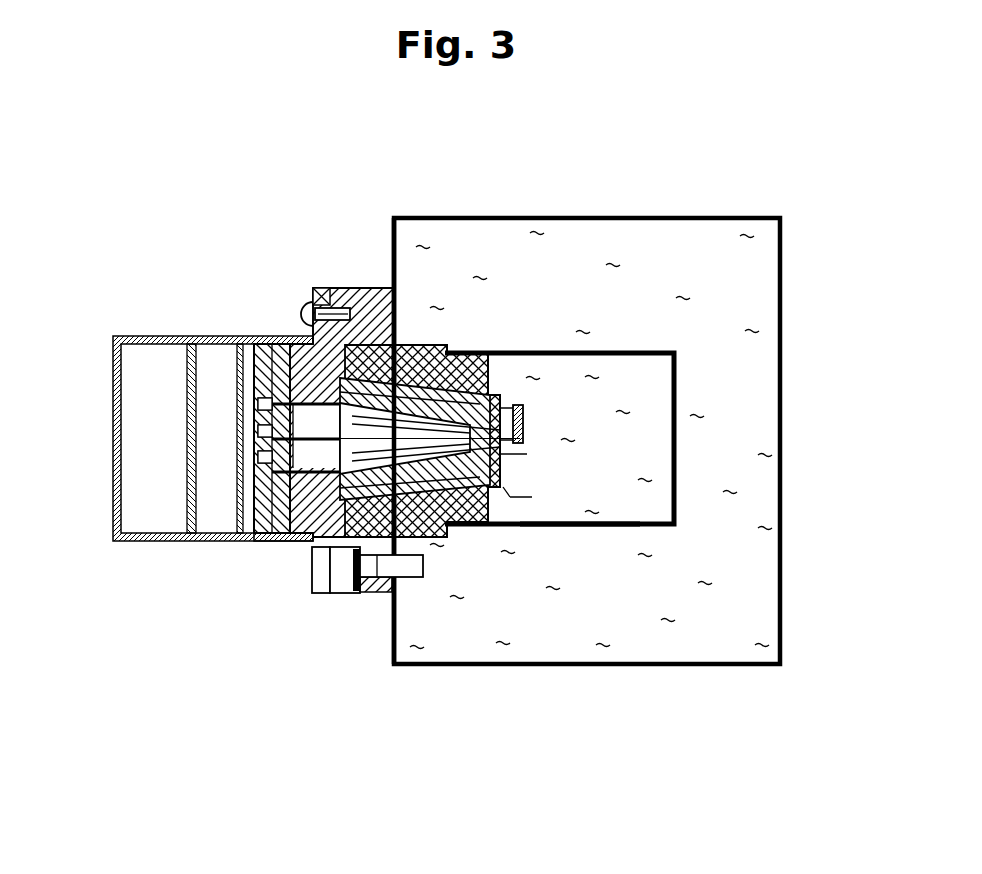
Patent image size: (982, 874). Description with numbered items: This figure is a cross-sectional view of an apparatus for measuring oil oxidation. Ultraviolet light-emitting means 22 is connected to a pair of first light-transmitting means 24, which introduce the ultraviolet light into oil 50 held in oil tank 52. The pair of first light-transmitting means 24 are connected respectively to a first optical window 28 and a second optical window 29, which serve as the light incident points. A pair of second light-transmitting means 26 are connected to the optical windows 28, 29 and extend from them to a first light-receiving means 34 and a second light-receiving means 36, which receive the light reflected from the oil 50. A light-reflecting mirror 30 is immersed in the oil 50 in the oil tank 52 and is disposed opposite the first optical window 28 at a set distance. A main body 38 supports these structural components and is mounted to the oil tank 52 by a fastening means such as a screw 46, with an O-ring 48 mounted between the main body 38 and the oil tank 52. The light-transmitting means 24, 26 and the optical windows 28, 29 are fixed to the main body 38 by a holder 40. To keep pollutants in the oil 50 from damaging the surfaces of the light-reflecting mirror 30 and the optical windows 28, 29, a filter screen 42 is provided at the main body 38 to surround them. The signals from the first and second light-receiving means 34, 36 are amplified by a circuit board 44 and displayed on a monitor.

The ultraviolet light-emitting means 22 is at (257, 440).
The first light-transmitting means 24 is at (372, 288).
The second light-transmitting means 26 is at (312, 542).
The first optical window 28 is at (513, 405).
The second optical window 29 is at (525, 500).
The light-reflecting mirror 30 is at (530, 418).
The first light-receiving means 34 is at (270, 343).
The second light-receiving means 36 is at (265, 543).
The main body 38 is at (350, 378).
The holder 40 is at (470, 393).
The filter screen 42 is at (578, 527).
The circuit board 44 is at (236, 347).
The screw 46 is at (342, 582).
The O-ring 48 is at (405, 560).
The oil 50 is at (655, 387).
The oil tank 52 is at (783, 553).